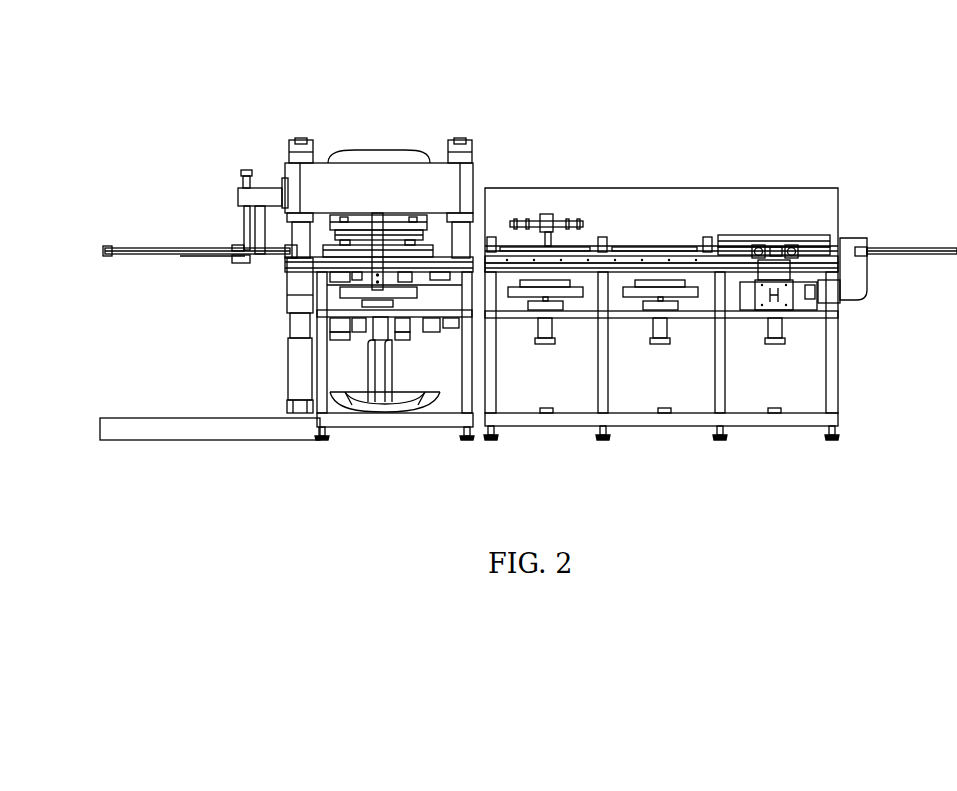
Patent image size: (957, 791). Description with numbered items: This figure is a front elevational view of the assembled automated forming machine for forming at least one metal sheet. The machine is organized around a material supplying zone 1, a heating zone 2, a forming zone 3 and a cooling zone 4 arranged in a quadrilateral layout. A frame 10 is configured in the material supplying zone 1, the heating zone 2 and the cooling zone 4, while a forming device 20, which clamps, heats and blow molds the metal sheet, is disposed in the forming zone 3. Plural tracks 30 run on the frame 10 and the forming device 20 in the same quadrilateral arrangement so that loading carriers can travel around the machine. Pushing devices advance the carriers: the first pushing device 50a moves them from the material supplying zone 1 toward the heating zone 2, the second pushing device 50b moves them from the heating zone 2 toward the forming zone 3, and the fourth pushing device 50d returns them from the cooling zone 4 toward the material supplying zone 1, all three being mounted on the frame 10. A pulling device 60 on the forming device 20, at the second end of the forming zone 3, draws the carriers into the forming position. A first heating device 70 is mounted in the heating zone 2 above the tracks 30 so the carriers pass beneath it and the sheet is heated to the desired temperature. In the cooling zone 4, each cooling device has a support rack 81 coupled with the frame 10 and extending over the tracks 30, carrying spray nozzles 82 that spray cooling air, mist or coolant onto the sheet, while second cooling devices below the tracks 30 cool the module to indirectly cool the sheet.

The material supplying zone 1 is at (713, 460).
The heating zone 2 is at (644, 171).
The forming zone 3 is at (357, 102).
The cooling zone 4 is at (430, 470).
The frame 10 is at (832, 365).
The forming device 20 is at (425, 138).
The tracks 30 is at (287, 307).
The first pushing device 50a is at (780, 268).
The second pushing device 50b is at (858, 246).
The fourth pushing device 50d is at (288, 258).
The pulling device 60 is at (240, 197).
The first heating device 70 is at (731, 187).
The support rack 81 is at (553, 233).
The spray nozzles 82 is at (533, 216).